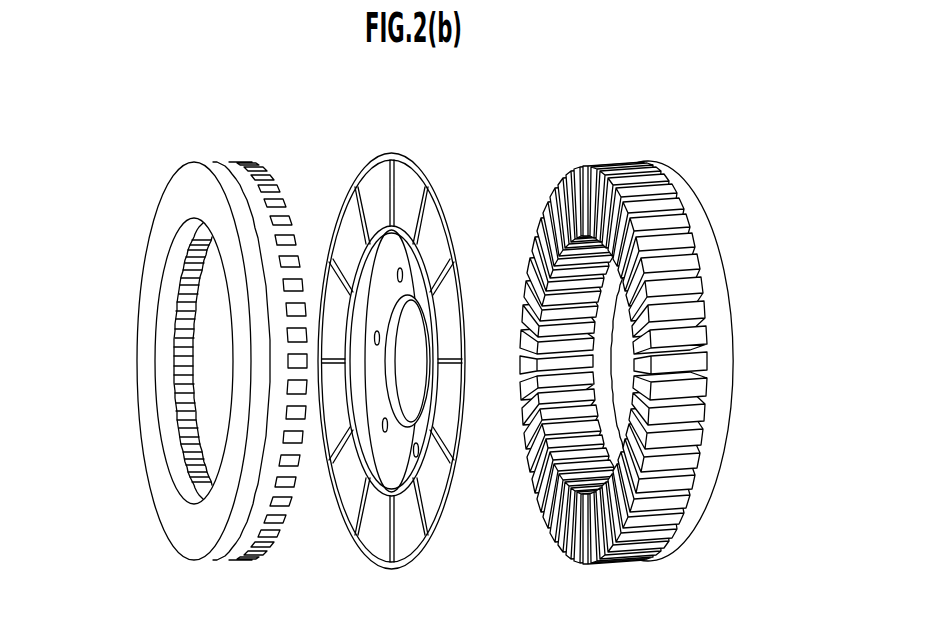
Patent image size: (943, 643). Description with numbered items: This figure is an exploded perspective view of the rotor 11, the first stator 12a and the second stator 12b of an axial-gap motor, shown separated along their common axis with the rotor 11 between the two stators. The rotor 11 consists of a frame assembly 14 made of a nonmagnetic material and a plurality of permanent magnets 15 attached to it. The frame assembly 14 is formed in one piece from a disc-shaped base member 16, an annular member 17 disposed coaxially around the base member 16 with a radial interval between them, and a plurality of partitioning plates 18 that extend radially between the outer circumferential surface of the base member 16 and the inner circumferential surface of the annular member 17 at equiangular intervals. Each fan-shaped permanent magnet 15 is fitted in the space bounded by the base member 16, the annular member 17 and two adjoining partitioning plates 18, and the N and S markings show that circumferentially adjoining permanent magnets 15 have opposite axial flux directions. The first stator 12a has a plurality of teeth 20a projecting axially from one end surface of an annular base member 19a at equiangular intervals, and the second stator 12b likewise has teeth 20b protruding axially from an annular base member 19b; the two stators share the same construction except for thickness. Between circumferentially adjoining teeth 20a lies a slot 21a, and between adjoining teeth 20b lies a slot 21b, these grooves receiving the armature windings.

The rotor 11 is at (407, 359).
The first stator 12a is at (665, 330).
The second stator 12b is at (204, 328).
The frame assembly 14 is at (392, 571).
The permanent magnet 15 is at (397, 172).
The base member 16 is at (386, 470).
The annular member 17 is at (473, 505).
The partitioning plate 18 is at (366, 486).
The annular base member 19a is at (722, 344).
The annular base member 19b is at (172, 522).
The tooth 20a is at (673, 223).
The tooth 20b is at (277, 190).
The slot 21a is at (690, 295).
The slot 21b is at (192, 313).